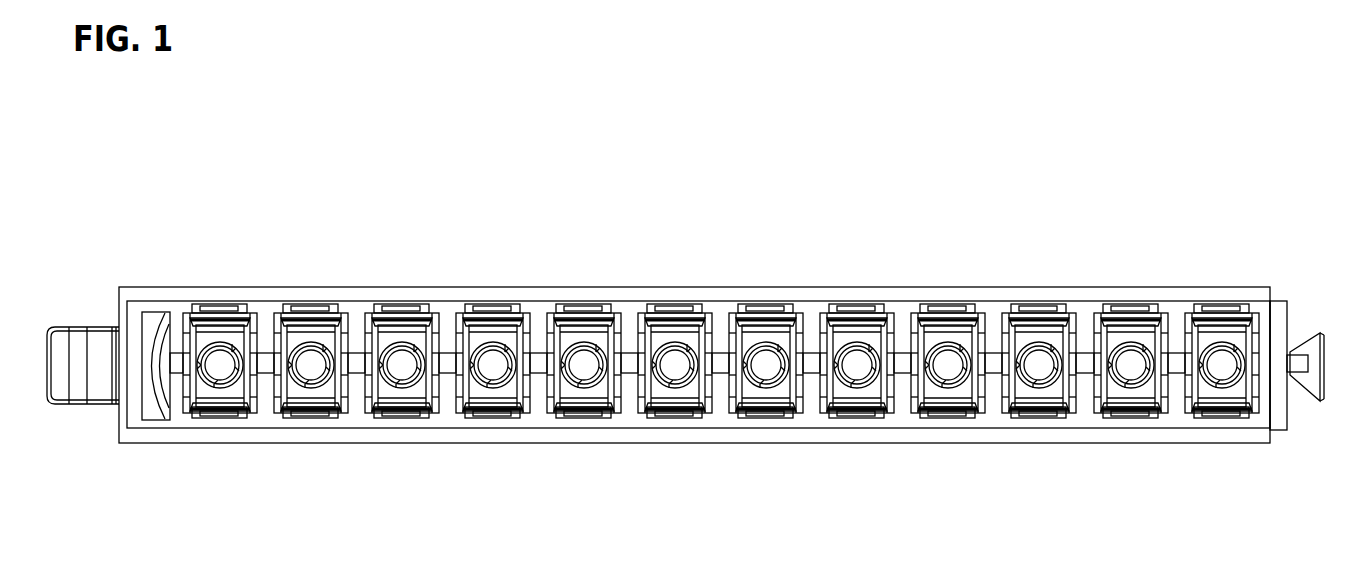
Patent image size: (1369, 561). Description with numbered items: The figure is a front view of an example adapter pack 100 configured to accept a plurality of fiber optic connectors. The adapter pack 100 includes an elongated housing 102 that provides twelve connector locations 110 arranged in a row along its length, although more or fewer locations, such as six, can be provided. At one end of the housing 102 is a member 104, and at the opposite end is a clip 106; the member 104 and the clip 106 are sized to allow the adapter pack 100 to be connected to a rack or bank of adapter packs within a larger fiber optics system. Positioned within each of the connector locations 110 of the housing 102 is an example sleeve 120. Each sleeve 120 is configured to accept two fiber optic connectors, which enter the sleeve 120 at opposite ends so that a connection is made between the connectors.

The adapter pack 100 is at (916, 181).
The housing 102 is at (1155, 288).
The member 104 is at (1318, 352).
The clip 106 is at (82, 327).
The connector locations 110 is at (568, 423).
The sleeve 120 is at (663, 325).